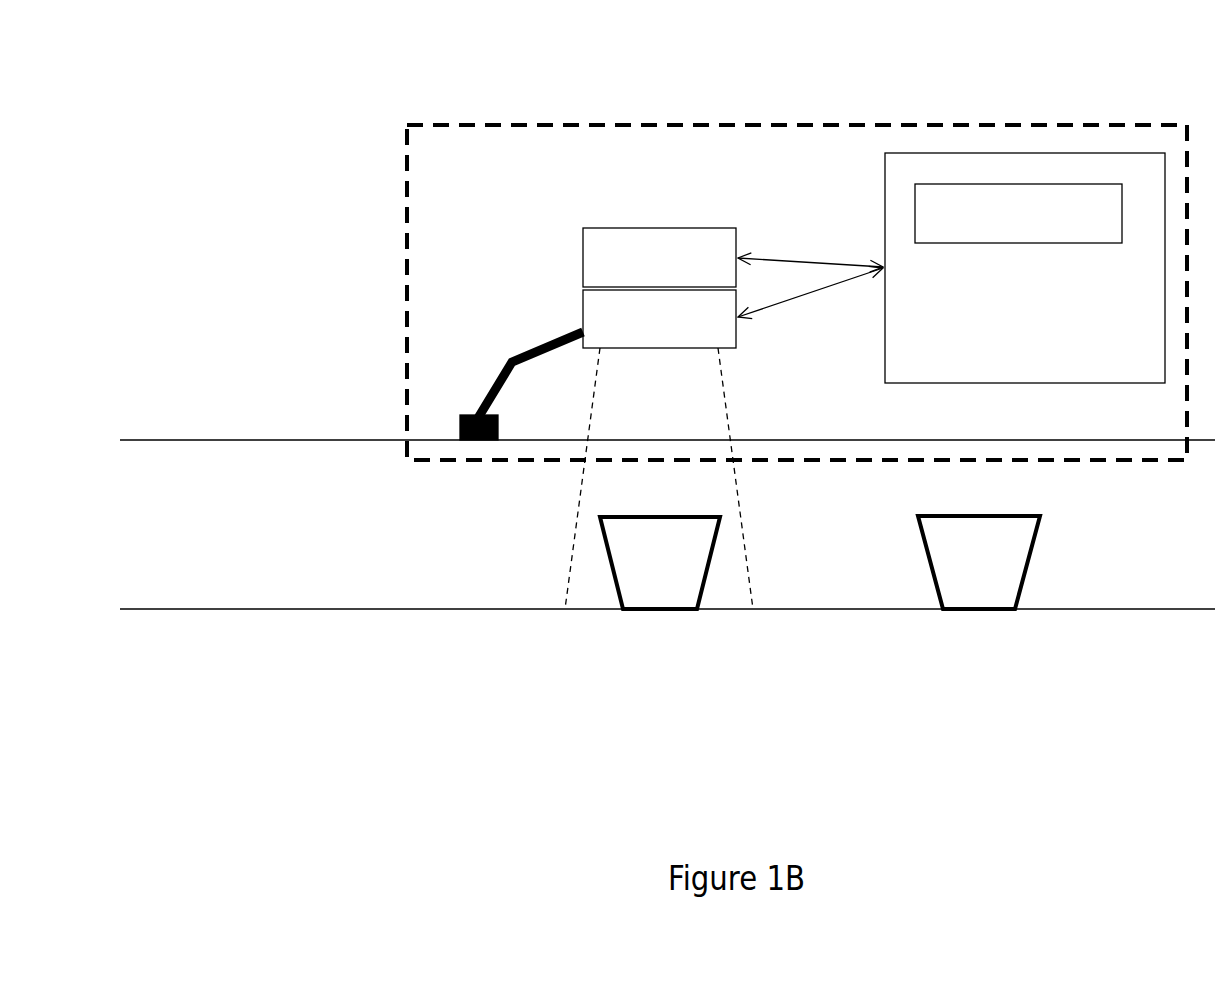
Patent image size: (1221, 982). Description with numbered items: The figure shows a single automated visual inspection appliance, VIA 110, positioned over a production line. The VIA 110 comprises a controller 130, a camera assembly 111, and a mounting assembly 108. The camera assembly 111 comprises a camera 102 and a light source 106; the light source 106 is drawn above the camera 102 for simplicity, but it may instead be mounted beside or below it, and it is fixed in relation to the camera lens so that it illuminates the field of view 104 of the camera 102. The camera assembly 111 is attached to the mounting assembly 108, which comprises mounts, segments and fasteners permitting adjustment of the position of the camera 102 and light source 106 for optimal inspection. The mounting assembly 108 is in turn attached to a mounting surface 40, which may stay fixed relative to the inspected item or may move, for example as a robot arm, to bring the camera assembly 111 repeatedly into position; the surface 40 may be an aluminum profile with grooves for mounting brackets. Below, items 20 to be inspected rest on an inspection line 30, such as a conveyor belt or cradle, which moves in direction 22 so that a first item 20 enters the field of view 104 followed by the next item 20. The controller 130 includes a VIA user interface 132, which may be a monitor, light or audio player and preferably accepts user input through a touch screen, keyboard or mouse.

The item 20 is at (820, 562).
The direction 22 is at (528, 577).
The inspection line 30 is at (528, 609).
The mounting surface 40 is at (357, 440).
The camera 102 is at (659, 319).
The field of view 104 is at (680, 395).
The light source 106 is at (659, 257).
The mounting assembly 108 is at (520, 352).
The VIA 110 is at (680, 123).
The camera assembly 111 is at (576, 229).
The controller 130 is at (1025, 268).
The VIA user interface 132 is at (1018, 213).